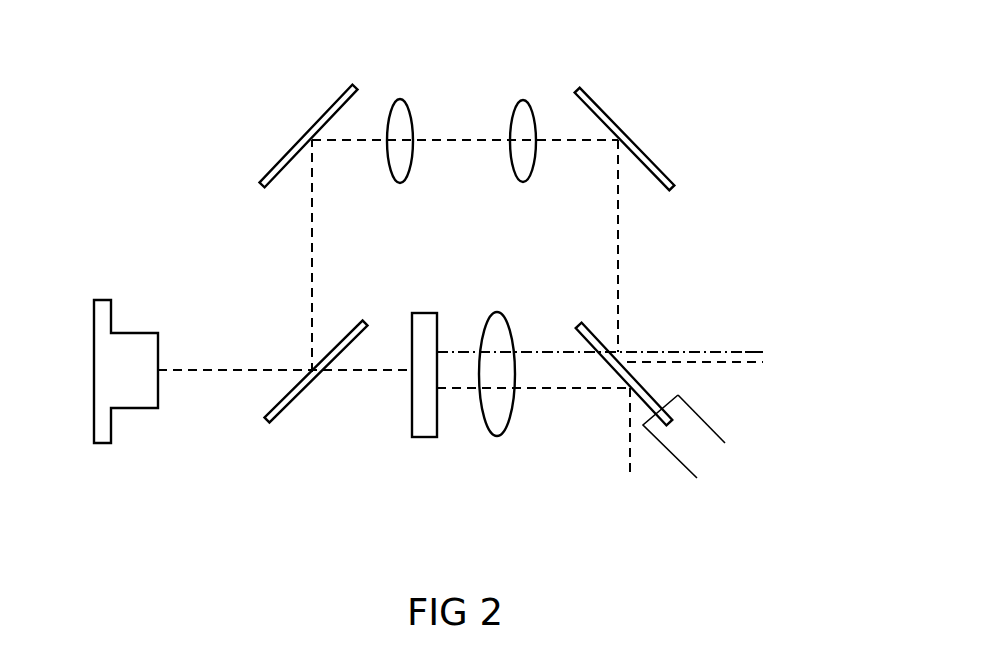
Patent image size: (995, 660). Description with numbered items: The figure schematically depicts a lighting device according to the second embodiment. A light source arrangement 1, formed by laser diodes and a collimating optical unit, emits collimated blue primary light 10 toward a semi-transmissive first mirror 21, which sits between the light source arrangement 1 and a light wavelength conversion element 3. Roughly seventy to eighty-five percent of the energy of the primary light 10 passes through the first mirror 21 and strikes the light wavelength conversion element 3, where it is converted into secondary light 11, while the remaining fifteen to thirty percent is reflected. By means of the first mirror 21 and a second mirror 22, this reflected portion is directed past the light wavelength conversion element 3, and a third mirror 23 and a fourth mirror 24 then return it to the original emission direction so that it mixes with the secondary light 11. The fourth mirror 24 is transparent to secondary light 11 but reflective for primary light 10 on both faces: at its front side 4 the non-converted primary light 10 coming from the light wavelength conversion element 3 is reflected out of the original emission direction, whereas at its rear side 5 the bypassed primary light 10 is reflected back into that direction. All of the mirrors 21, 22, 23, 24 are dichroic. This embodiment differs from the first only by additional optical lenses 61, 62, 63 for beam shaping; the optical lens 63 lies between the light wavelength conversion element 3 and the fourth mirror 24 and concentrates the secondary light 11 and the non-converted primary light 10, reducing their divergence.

The light source arrangement 1 is at (130, 402).
The primary light 10 is at (211, 375).
The secondary light 11 is at (753, 352).
The first mirror 21 is at (291, 407).
The second mirror 22 is at (342, 98).
The third mirror 23 is at (590, 100).
The fourth mirror 24 is at (578, 325).
The light wavelength conversion element 3 is at (425, 437).
The front side 4 is at (681, 452).
The rear side 5 is at (712, 432).
The optical lens 61 is at (400, 115).
The optical lens 62 is at (523, 113).
The optical lens 63 is at (497, 420).